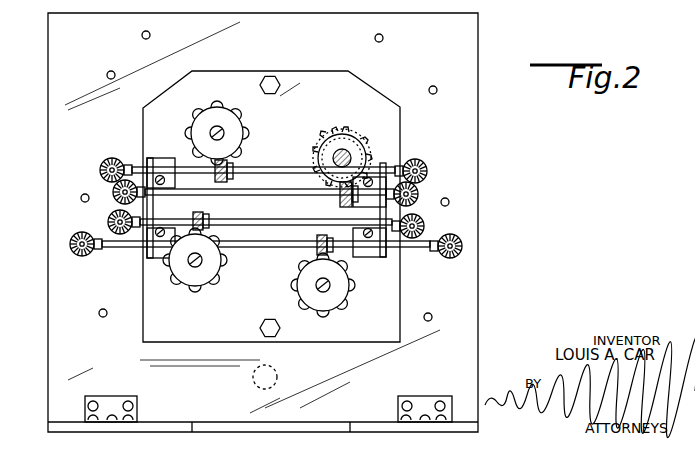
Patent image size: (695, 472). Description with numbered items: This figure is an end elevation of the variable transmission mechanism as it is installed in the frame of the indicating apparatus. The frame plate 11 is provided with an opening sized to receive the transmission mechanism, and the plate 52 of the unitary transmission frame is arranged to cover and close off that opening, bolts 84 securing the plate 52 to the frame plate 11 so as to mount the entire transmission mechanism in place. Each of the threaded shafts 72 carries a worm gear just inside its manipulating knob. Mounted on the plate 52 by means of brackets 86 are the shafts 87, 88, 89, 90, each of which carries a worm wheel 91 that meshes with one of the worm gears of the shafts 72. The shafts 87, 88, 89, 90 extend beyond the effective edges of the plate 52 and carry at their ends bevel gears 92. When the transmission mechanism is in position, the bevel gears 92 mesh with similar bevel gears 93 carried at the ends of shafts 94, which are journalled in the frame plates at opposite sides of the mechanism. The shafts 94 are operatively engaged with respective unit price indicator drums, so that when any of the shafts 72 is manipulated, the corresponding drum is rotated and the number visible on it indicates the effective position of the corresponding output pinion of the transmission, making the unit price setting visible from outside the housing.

The frame plate 11 is at (478, 49).
The plate 52 is at (355, 97).
The shaft 72 is at (220, 126).
The bolt 84 is at (276, 78).
The bracket 86 is at (160, 158).
The shaft 87 is at (280, 160).
The shaft 88 is at (248, 195).
The shaft 89 is at (247, 232).
The shaft 90 is at (280, 250).
The worm wheel 91 is at (340, 203).
The bevel gear 92 is at (400, 163).
The bevel gear 93 is at (428, 168).
The shaft 94 is at (112, 158).